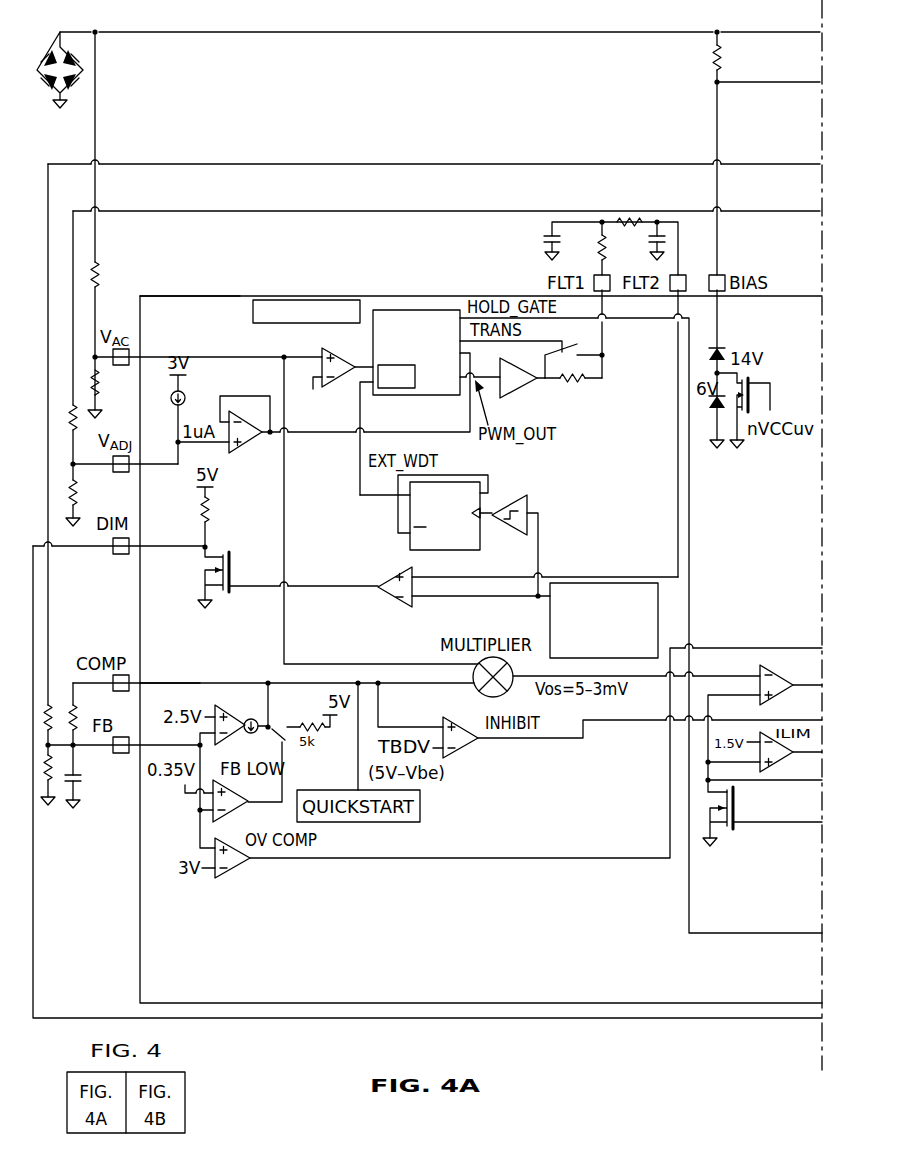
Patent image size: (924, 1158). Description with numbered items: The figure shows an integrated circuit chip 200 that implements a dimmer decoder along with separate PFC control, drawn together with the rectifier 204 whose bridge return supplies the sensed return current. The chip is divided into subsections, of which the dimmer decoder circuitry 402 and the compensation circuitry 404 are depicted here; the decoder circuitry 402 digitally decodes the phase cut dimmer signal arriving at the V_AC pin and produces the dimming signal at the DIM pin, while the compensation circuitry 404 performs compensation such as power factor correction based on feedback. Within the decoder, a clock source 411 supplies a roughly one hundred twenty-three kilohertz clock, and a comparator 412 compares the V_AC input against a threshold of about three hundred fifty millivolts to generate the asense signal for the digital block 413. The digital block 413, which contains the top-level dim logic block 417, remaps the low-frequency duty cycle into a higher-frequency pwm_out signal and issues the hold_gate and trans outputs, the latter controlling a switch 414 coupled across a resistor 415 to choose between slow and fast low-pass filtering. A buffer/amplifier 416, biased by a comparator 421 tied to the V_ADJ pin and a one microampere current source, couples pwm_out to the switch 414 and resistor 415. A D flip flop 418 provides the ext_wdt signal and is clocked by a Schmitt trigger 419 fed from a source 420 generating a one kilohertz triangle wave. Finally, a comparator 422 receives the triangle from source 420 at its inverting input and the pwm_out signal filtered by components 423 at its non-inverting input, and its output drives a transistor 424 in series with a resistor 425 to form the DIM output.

The integrated circuit chip 200 is at (179, 995).
The rectifier 204 is at (54, 43).
The dimmer decoder circuitry 402 is at (206, 316).
The compensation circuitry 404 is at (201, 678).
The clock source 411 is at (277, 299).
The comparator 412 is at (318, 363).
The digital block 413 is at (393, 310).
The switch 414 is at (578, 351).
The resistor 415 is at (590, 388).
The buffer/amplifier 416 is at (513, 397).
The logic block 417 is at (405, 389).
The D flip flop 418 is at (410, 542).
The Schmitt trigger 419 is at (530, 500).
The source 420 is at (612, 583).
The comparator 421 is at (256, 447).
The comparator 422 is at (380, 594).
The components 423 is at (545, 239).
The transistor 424 is at (233, 557).
The resistor 425 is at (213, 510).